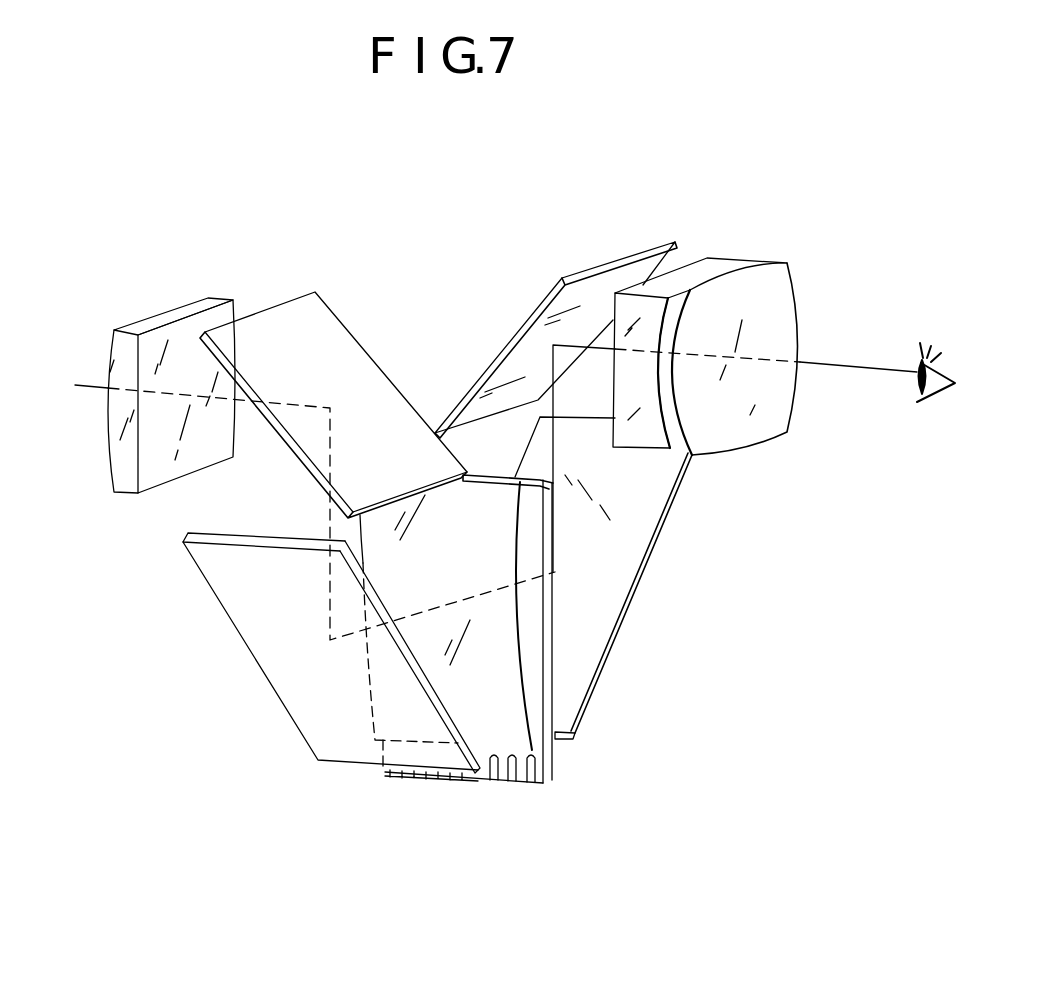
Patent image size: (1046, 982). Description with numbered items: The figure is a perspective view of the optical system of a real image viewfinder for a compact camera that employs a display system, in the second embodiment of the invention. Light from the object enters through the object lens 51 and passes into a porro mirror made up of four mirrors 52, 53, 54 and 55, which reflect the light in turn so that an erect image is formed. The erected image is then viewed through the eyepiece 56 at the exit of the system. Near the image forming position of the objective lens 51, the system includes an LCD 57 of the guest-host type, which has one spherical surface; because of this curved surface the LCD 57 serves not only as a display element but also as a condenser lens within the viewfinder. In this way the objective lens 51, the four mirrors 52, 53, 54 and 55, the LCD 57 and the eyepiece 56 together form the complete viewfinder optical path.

The object lens 51 is at (190, 306).
The mirror 52 is at (342, 351).
The mirror 53 is at (318, 737).
The mirror 54 is at (663, 532).
The mirror 55 is at (602, 263).
The eyepiece 56 is at (725, 258).
The LCD 57 is at (510, 715).